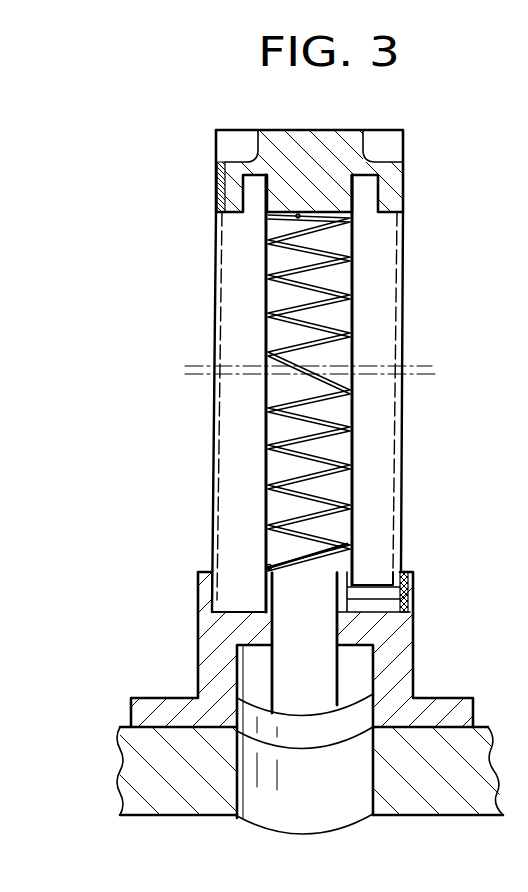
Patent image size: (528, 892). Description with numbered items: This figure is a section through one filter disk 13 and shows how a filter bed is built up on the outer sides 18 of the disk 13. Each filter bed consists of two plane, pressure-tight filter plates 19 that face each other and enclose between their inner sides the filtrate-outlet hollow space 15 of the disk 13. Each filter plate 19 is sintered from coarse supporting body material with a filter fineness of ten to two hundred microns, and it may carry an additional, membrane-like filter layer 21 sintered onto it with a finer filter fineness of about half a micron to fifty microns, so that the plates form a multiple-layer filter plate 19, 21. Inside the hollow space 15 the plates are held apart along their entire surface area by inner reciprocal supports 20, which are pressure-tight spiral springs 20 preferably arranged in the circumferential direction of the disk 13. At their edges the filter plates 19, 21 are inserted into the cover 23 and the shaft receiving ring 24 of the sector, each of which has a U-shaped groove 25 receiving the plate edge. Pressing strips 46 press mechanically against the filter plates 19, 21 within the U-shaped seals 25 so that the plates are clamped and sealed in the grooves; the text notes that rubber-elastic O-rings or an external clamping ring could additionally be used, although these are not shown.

The filter disk 13 is at (423, 233).
The filtrate-outlet hollow space 15 is at (282, 260).
The outer sides of the filter disk 18 is at (212, 432).
The filter plate 19 is at (243, 305).
The spiral spring support 20 is at (343, 522).
The additional filter layer 21 is at (215, 338).
The cover 23 is at (318, 163).
The shaft receiving ring 24 is at (348, 626).
The U-shaped groove 25 is at (383, 190).
The pressing strip 46 is at (222, 186).